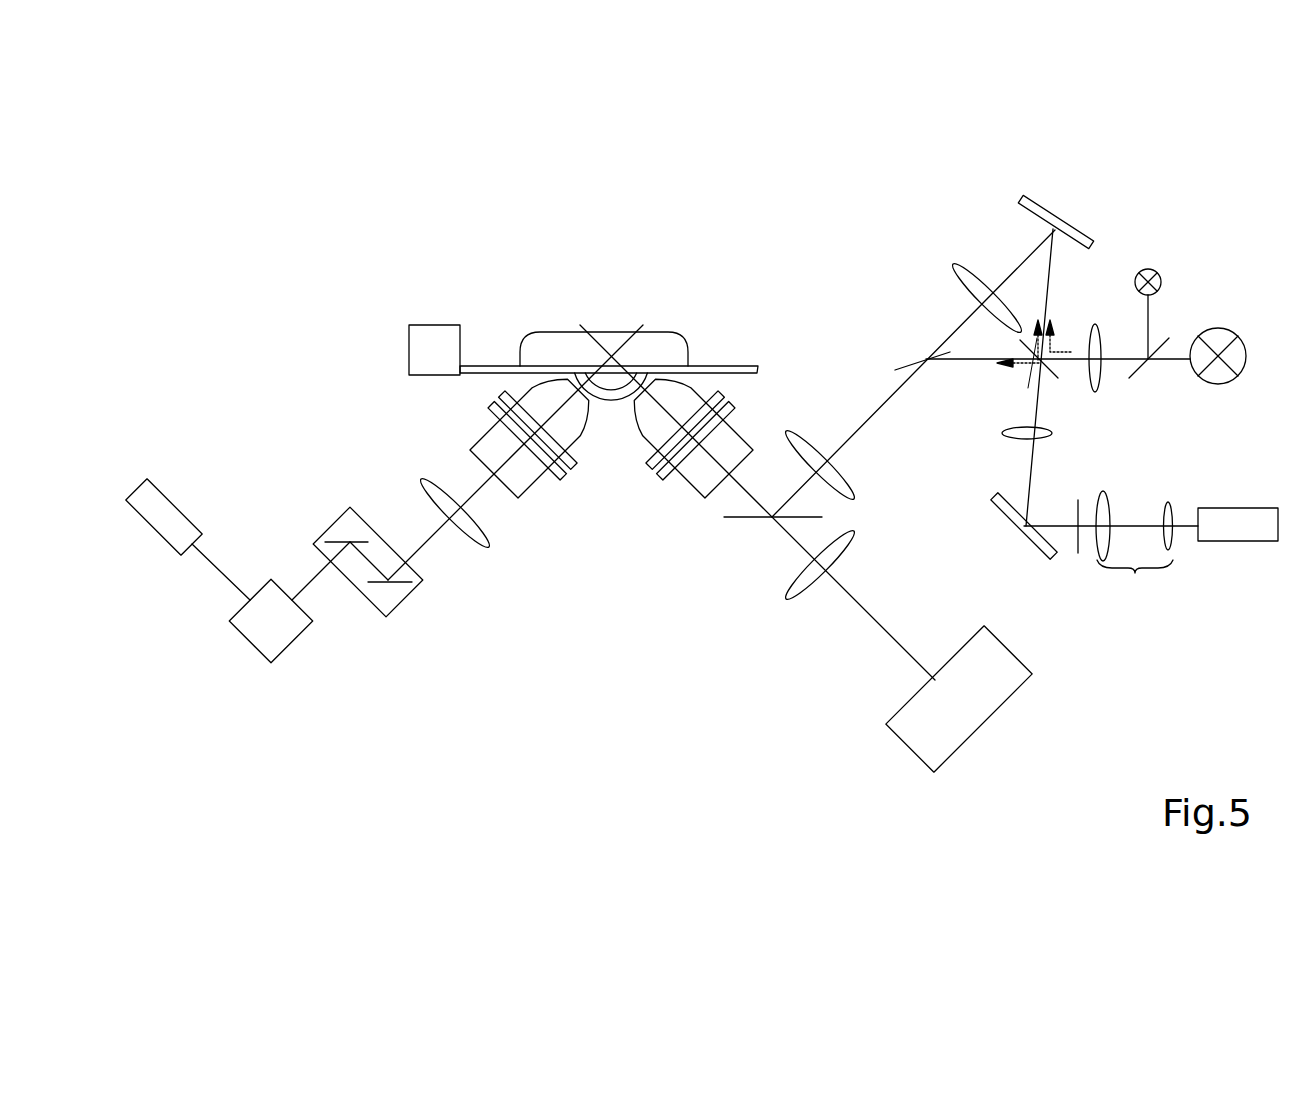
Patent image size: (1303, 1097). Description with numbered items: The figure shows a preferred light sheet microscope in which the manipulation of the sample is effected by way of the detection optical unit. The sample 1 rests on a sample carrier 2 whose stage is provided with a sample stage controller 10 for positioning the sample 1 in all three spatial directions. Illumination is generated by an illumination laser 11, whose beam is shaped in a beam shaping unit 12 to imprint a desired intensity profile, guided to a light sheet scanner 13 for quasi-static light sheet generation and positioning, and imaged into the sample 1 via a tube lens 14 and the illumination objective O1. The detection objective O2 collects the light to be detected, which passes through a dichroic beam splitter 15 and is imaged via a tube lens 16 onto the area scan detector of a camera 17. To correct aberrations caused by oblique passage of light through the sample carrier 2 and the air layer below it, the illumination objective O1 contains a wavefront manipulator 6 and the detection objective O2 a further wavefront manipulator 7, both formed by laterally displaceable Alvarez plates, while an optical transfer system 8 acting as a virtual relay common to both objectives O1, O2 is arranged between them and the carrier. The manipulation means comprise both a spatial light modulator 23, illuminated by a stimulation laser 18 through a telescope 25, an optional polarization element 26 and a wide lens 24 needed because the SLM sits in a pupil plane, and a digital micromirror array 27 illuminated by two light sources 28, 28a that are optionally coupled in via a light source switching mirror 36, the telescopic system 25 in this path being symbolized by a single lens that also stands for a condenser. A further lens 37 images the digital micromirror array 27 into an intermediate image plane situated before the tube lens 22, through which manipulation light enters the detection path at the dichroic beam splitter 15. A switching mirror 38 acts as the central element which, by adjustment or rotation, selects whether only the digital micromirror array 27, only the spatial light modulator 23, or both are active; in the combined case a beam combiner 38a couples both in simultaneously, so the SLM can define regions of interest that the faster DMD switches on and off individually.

The sample 1 is at (662, 337).
The sample carrier 2 is at (735, 363).
The wavefront manipulator 6 is at (490, 406).
The further wavefront manipulator 7 is at (646, 460).
The optical transfer system 8 is at (610, 397).
The sample stage controller 10 is at (450, 323).
The illumination laser 11 is at (158, 488).
The beam shaping unit 12 is at (267, 587).
The light sheet scanner 13 is at (392, 612).
The tube lens 14 is at (422, 482).
The dichroic beam splitter 15 is at (747, 518).
The tube lens 16 is at (808, 592).
The camera 17 is at (908, 733).
The stimulation laser 18 is at (1245, 540).
The tube lens 22 is at (807, 445).
The spatial light modulator 23 is at (1010, 517).
The lens 24 is at (1013, 433).
The telescope 25 is at (1097, 322).
The polarization element 26 is at (1077, 558).
The digital micromirror array 27 is at (1023, 207).
The light source 28 is at (1222, 373).
The light source 28a is at (1162, 282).
The light source switching mirror 36 is at (1223, 330).
The lens 37 is at (958, 270).
The switching mirror 38 is at (1058, 378).
The beam combiner 38a is at (905, 365).
The illumination objective O1 is at (520, 497).
The detection objective O2 is at (702, 493).